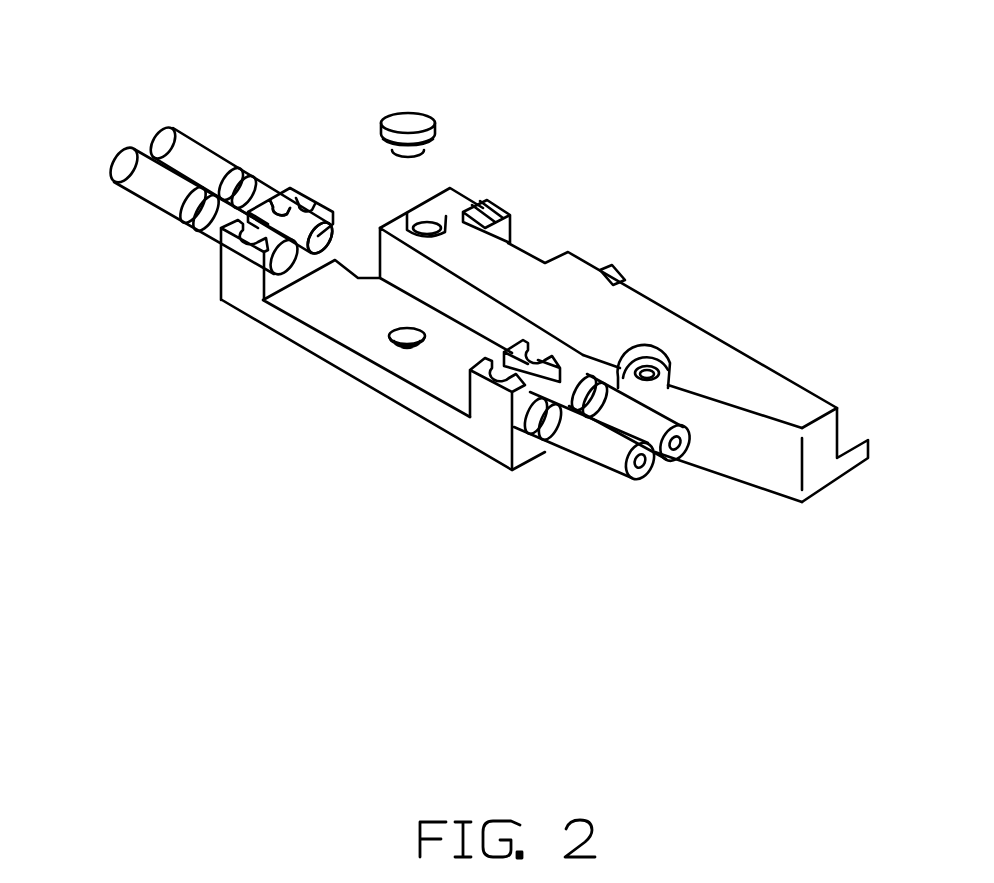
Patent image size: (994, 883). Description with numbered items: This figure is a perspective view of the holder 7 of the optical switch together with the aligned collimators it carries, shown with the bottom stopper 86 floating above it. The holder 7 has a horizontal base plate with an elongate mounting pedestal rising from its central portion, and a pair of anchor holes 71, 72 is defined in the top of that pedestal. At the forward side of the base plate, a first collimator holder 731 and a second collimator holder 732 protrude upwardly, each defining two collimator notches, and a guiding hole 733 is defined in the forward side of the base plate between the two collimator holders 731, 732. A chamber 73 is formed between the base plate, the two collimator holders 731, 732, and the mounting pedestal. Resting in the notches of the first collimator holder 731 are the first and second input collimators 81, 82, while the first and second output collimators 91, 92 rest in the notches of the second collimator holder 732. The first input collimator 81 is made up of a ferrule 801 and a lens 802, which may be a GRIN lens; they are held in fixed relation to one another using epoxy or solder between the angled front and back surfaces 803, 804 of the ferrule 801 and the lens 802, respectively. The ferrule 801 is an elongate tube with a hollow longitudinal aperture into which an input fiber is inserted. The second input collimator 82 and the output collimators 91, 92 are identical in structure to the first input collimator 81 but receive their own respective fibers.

The holder 7 is at (707, 347).
The anchor hole 71 is at (420, 223).
The anchor hole 72 is at (647, 368).
The chamber 73 is at (328, 305).
The first collimator holder 731 is at (243, 258).
The second collimator holder 732 is at (487, 417).
The guiding hole 733 is at (402, 348).
The first input collimator 81 is at (270, 205).
The second input collimator 82 is at (180, 203).
The bottom stopper 86 is at (402, 118).
The ferrule 801 is at (170, 148).
The lens 802 is at (318, 224).
The angled front surface 803 is at (236, 180).
The angled back surface 804 is at (252, 203).
The first output collimator 91 is at (675, 450).
The second output collimator 92 is at (612, 455).